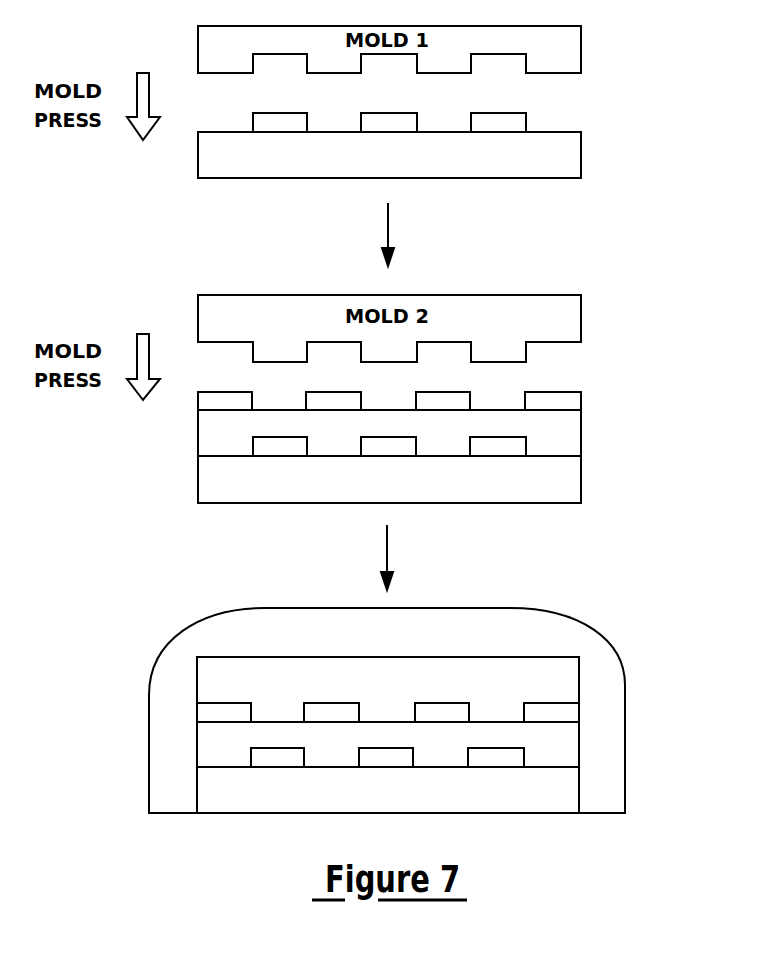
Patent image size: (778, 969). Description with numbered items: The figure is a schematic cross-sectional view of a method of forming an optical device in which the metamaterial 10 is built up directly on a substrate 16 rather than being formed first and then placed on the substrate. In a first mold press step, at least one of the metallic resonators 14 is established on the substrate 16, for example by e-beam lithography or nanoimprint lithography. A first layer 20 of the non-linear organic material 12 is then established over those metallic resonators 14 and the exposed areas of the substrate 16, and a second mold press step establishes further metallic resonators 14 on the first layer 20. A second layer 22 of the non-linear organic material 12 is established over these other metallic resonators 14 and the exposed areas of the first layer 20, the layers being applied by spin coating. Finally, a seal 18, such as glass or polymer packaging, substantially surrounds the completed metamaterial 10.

The metamaterial 10 is at (496, 657).
The non-linear organic material 12 is at (379, 594).
The metallic resonators 14 is at (510, 122).
The substrate 16 is at (563, 159).
The seal 18 is at (238, 632).
The first layer 20 is at (563, 432).
The second layer 22 is at (558, 677).